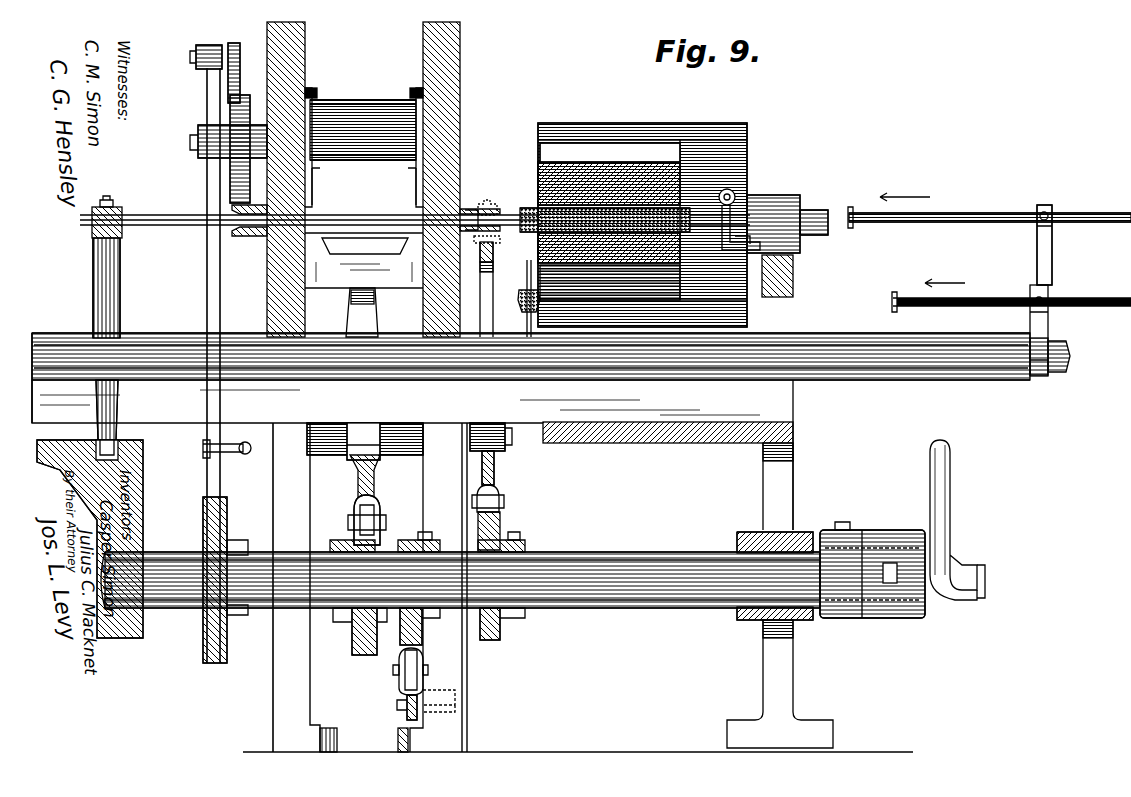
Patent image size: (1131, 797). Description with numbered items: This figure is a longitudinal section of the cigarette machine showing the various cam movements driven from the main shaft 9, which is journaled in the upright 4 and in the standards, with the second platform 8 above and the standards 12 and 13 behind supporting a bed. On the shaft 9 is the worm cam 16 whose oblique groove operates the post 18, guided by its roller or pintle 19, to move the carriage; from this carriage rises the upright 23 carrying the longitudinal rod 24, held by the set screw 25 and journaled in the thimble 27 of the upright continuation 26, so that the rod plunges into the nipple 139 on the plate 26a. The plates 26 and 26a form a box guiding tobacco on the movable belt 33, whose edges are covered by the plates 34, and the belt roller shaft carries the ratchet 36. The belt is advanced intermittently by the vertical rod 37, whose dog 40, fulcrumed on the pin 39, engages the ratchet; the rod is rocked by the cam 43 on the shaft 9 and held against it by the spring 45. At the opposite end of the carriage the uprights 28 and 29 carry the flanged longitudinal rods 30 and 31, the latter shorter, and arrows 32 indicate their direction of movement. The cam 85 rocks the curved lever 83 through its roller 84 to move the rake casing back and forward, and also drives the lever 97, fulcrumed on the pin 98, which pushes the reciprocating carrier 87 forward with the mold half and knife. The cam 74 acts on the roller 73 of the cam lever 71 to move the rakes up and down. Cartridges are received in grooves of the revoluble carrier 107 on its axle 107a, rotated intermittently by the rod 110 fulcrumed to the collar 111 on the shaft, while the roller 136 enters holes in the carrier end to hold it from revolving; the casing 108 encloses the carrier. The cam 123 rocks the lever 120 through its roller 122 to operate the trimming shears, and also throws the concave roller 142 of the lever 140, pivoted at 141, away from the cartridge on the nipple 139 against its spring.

The upright 4 is at (798, 660).
The second platform 8 is at (626, 440).
The shaft 9 is at (166, 555).
The standard 12 is at (467, 664).
The standard 13 is at (273, 695).
The worm cam 16 is at (143, 478).
The post 18 is at (120, 405).
The roller or pintle 19 is at (120, 444).
The upright 23 is at (122, 278).
The longitudinal rod 24 is at (158, 215).
The set screw 25 is at (110, 200).
The upright continuation of the standards 26 is at (267, 290).
The upright plate 26a is at (461, 95).
The thimble 27 is at (248, 236).
The upright 28 is at (1052, 252).
The upright 29 is at (1030, 312).
The longitudinal rod 30 is at (1095, 206).
The longitudinal rod 31 is at (313, 172).
The direction arrow 32 is at (852, 226).
The movable belt 33 is at (355, 100).
The plates 34 is at (318, 85).
The ratchet 36 is at (250, 95).
The vertical rod 37 is at (206, 297).
The pin 39 is at (188, 52).
The dog 40 is at (250, 42).
The cam 43 is at (203, 658).
The spring 45 is at (244, 458).
The cam lever 71 is at (405, 720).
The roller 73 is at (403, 700).
The cam 74 is at (398, 648).
The lever 83 is at (358, 482).
The roller 84 is at (382, 512).
The cam 85 is at (352, 655).
The reciprocating carrier 87 is at (365, 270).
The lever 97 is at (379, 318).
The pin 98 is at (404, 456).
The revoluble carrier 107 is at (606, 160).
The axle 107a is at (826, 210).
The motor casing 108 is at (747, 128).
The rod 110 is at (952, 502).
The collar 111 is at (908, 620).
The lever 120 is at (496, 482).
The roller 122 is at (524, 315).
The cam 123 is at (502, 632).
The roller 136 is at (735, 195).
The nipple 139 is at (466, 200).
The lever 140 is at (494, 292).
The pivot 141 is at (515, 448).
The concave roller 142 is at (500, 192).